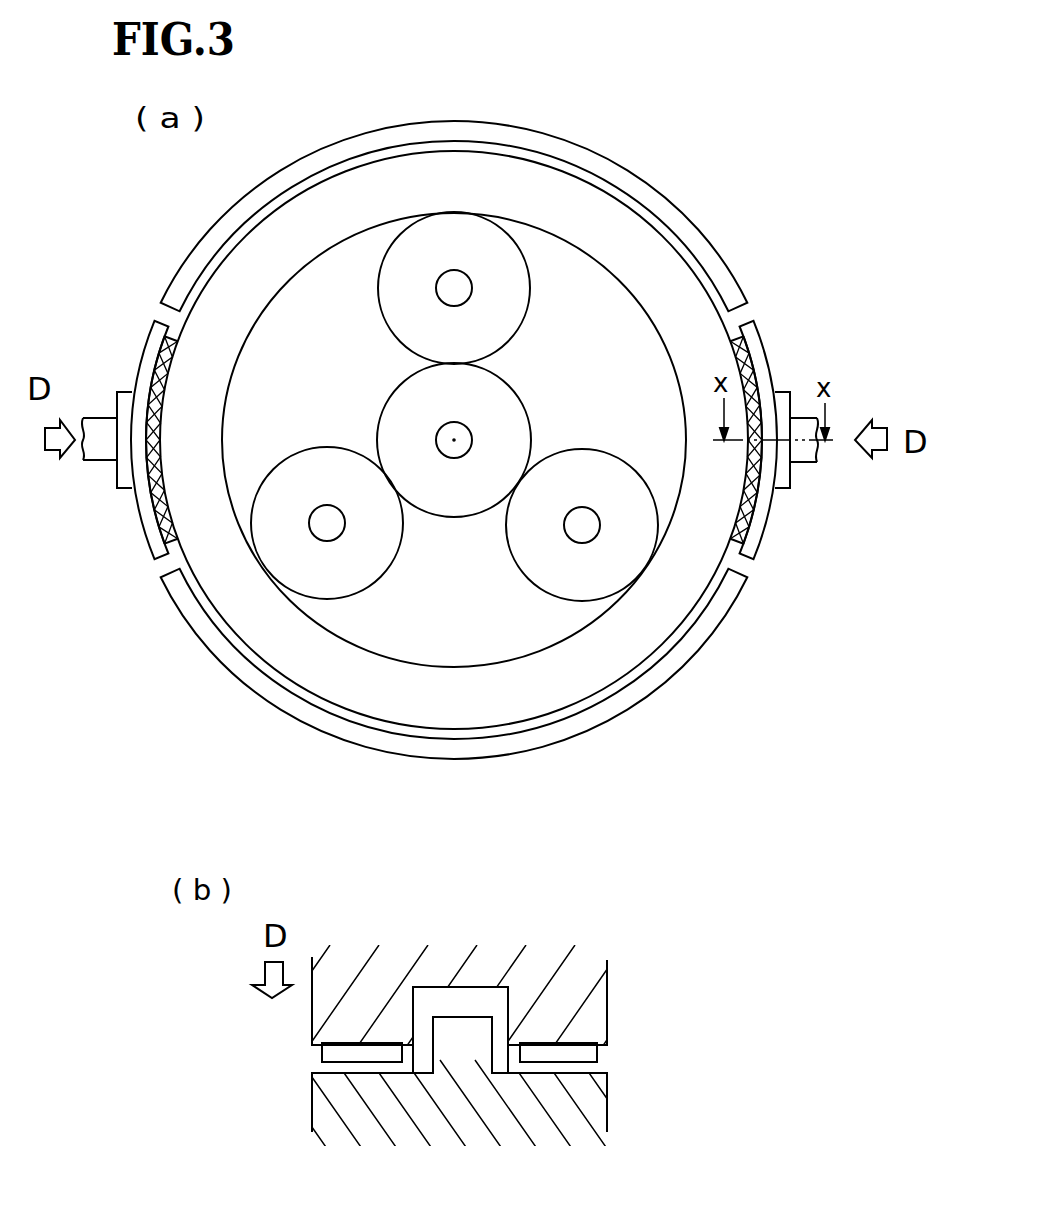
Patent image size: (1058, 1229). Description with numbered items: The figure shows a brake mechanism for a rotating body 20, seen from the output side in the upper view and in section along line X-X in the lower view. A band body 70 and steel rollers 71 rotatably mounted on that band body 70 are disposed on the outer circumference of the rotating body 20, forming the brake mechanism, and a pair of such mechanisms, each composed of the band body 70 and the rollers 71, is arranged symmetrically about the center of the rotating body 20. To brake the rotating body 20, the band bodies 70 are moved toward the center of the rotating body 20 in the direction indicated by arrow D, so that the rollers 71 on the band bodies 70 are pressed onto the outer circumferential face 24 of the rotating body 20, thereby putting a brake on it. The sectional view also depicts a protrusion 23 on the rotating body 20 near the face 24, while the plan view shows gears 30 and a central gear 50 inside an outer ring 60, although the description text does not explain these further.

The rotating body 20 is at (628, 237).
The protrusion 23 is at (433, 1050).
The outer circumferential face 24 is at (322, 1062).
The planetary gear 30 is at (496, 251).
The sun gear 50 is at (470, 503).
The outer ring 60 is at (210, 228).
The band body 70 is at (145, 352).
The steel roller 71 is at (155, 510).